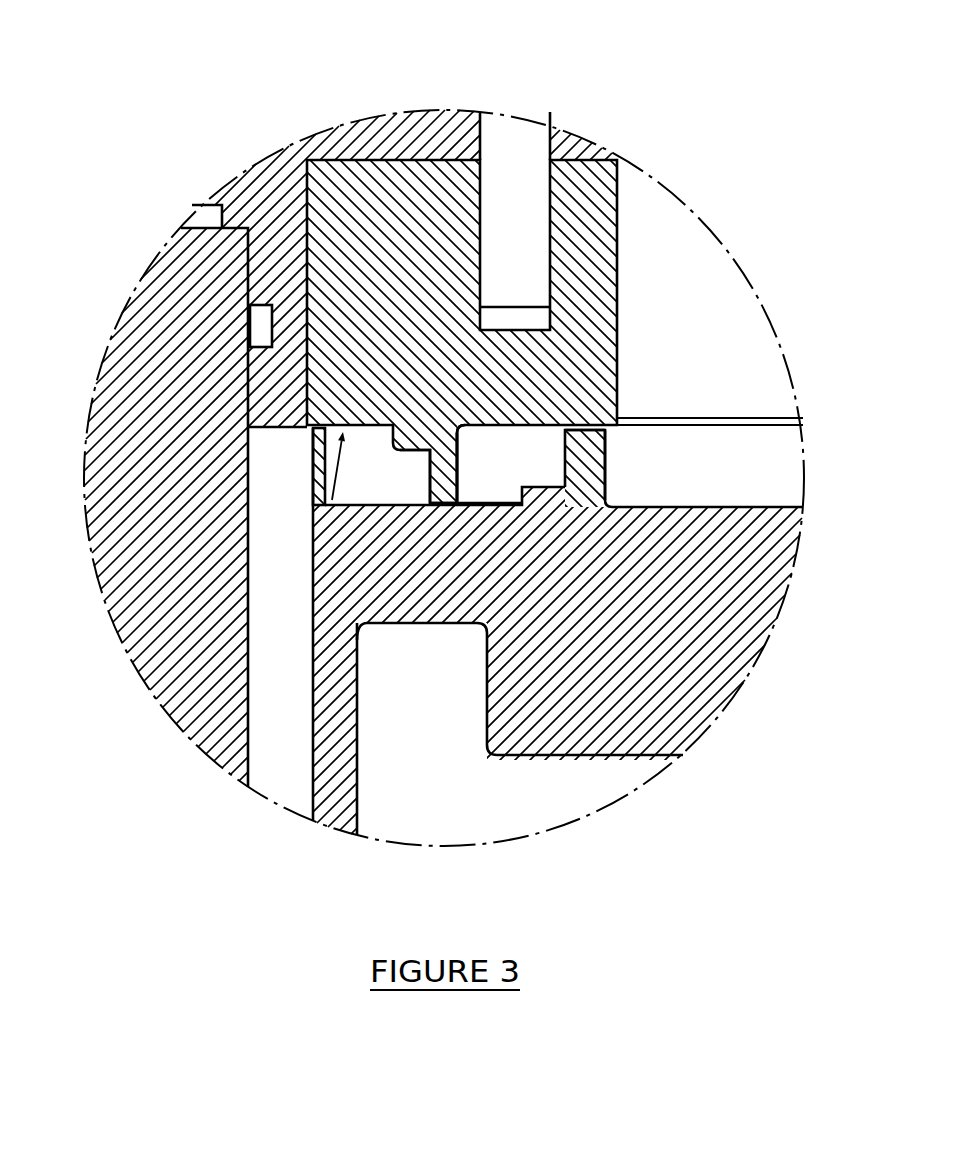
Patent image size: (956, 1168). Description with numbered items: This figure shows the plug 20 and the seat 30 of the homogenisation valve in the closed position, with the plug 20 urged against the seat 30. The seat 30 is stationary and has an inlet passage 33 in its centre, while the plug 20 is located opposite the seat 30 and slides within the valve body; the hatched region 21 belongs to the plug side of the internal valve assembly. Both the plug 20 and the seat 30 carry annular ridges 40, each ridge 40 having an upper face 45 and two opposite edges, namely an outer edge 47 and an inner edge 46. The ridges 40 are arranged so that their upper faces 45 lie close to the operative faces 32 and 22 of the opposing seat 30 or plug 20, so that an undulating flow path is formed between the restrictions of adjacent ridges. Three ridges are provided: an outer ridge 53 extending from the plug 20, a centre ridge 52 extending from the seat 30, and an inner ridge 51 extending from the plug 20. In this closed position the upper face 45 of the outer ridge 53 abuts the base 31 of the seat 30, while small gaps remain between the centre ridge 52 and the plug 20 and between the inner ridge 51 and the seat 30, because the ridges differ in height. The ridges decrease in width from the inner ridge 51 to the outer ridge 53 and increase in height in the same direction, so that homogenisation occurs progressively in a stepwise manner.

The plug 20 is at (687, 720).
The housing body 21 is at (760, 572).
The operative face of the plug 22 is at (378, 489).
The seat 30 is at (366, 180).
The base of the seat 31 is at (302, 390).
The operative face of the seat 32 is at (313, 550).
The inlet passage 33 is at (724, 298).
The annular ridge 40 is at (313, 446).
The upper face 45 is at (588, 428).
The inner edge 46 is at (606, 470).
The outer edge 47 is at (562, 461).
The inner ridge 51 is at (608, 468).
The centre ridge 52 is at (443, 487).
The outer ridge 53 is at (314, 476).